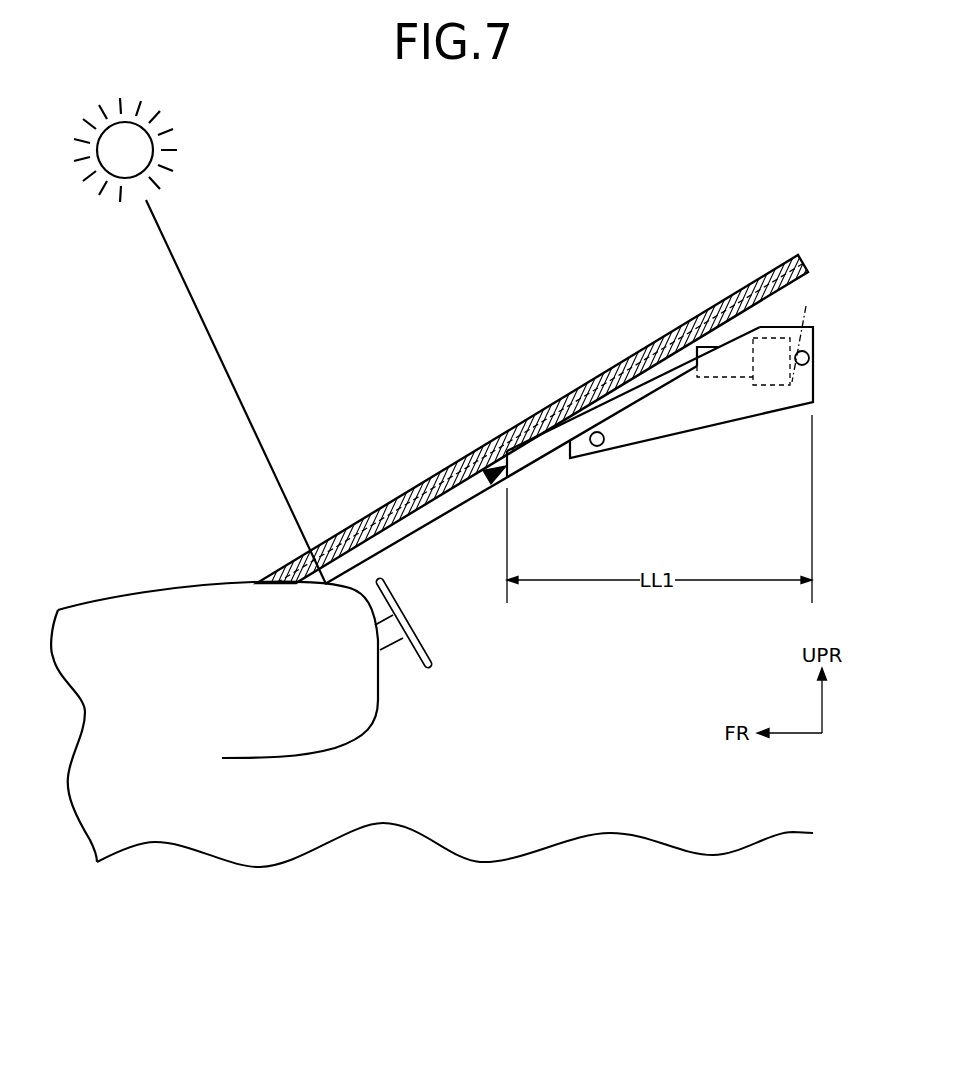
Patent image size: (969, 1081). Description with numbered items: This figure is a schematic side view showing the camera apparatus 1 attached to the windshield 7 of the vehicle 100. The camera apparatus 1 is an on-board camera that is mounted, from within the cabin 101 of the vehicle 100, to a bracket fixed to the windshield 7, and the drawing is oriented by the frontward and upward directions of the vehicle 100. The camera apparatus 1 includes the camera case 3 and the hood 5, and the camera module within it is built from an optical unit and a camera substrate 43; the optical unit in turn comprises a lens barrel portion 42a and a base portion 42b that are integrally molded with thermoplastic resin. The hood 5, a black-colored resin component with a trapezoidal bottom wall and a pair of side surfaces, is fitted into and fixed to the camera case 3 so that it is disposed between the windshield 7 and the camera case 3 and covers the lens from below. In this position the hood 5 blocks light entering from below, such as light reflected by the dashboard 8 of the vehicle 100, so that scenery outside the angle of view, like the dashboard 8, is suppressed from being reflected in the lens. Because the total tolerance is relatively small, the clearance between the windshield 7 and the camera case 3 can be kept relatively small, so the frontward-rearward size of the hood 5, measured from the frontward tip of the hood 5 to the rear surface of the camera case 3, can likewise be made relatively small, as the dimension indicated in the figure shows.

The camera apparatus 1 is at (818, 380).
The camera case 3 is at (812, 326).
The hood 5 is at (527, 457).
The windshield 7 is at (718, 302).
The dashboard 8 is at (380, 688).
The lens barrel portion 42a is at (720, 347).
The base portion 42b is at (753, 338).
The camera substrate 43 is at (802, 330).
The vehicle 100 is at (443, 333).
The cabin 101 is at (517, 818).